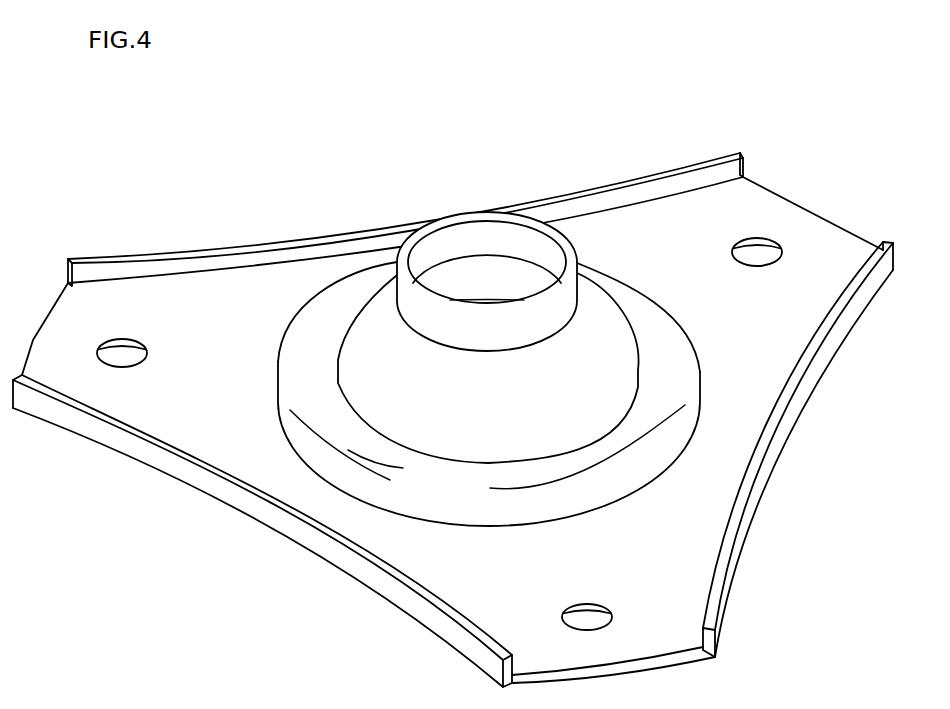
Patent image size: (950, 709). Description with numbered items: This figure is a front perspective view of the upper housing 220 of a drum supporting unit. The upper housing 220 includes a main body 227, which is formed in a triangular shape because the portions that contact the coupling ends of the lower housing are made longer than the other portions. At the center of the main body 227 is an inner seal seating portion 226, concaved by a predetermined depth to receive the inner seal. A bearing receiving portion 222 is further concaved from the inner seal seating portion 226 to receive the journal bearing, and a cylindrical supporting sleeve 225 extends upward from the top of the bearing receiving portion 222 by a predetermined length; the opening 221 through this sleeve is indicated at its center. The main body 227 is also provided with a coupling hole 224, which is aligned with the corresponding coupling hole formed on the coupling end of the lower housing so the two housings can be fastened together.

The upper housing 220 is at (399, 184).
The through hole 221 is at (500, 271).
The bearing receiving portion 222 is at (398, 388).
The coupling hole 224 is at (757, 247).
The cylindrical supporting sleeve 225 is at (563, 243).
The inner seal seating portion 226 is at (328, 327).
The main body 227 is at (490, 578).